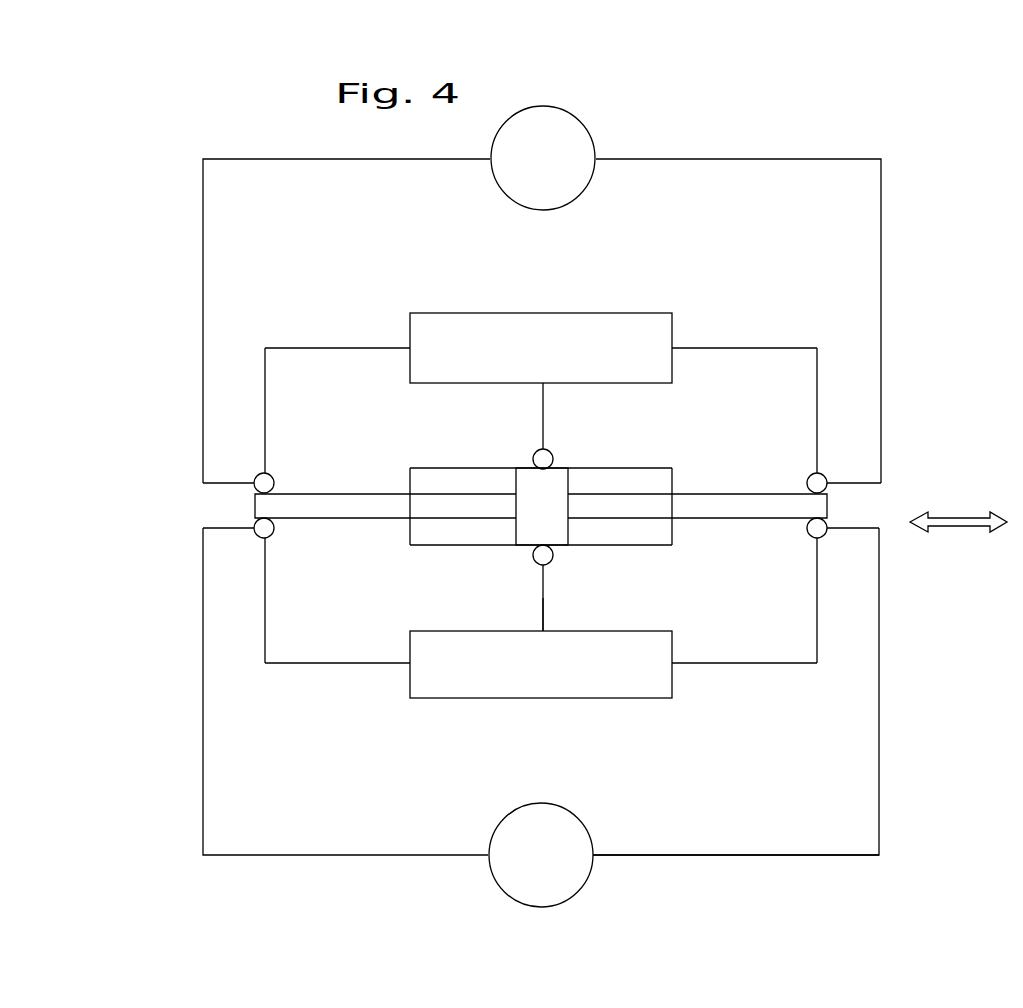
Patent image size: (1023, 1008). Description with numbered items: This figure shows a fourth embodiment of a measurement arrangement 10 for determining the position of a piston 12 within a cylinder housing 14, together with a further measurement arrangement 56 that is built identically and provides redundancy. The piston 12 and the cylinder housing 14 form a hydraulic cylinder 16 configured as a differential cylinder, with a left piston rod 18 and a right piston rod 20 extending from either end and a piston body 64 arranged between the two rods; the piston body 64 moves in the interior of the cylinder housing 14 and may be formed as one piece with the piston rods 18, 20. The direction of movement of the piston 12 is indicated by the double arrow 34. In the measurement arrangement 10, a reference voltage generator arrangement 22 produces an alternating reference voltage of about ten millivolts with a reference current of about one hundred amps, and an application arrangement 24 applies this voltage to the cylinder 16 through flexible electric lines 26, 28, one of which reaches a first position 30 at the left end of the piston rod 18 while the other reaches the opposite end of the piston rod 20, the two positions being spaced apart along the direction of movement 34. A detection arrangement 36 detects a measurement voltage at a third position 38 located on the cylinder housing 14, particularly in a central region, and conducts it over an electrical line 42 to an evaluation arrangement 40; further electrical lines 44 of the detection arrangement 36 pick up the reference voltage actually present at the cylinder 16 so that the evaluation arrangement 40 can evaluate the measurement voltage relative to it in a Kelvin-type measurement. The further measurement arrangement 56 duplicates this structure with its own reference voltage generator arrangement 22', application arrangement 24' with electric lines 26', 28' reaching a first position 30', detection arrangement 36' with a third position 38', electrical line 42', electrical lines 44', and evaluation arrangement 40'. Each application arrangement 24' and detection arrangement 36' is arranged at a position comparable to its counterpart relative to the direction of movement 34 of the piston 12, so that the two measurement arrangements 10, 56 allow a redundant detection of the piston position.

The measurement arrangement 10 is at (723, 140).
The piston 12 is at (541, 515).
The cylinder housing 14 is at (460, 468).
The cylinder 16 is at (461, 547).
The left piston rod 18 is at (388, 506).
The right piston rod 20 is at (743, 505).
The reference voltage generator arrangement 22 is at (543, 158).
The reference voltage generator arrangement 22' is at (541, 855).
The application arrangement 24 is at (533, 290).
The application arrangement 24' is at (539, 716).
The electric line 26 is at (346, 290).
The electric line 26' is at (345, 691).
The electric line 28 is at (738, 290).
The electric line 28' is at (736, 691).
The first position 30 is at (542, 453).
The first position 30' is at (544, 557).
The double arrow 34 is at (960, 516).
The detection arrangement 36 is at (541, 389).
The detection arrangement 36' is at (541, 616).
The third position 38 is at (607, 449).
The third position 38' is at (623, 568).
The evaluation arrangement 40 is at (541, 348).
The evaluation arrangement 40' is at (541, 664).
The electrical line 42 is at (580, 416).
The electrical line 42' is at (506, 598).
The electrical lines 44 is at (541, 377).
The electrical lines 44' is at (539, 616).
The further measurement arrangement 56 is at (710, 862).
The piston body 64 is at (541, 600).